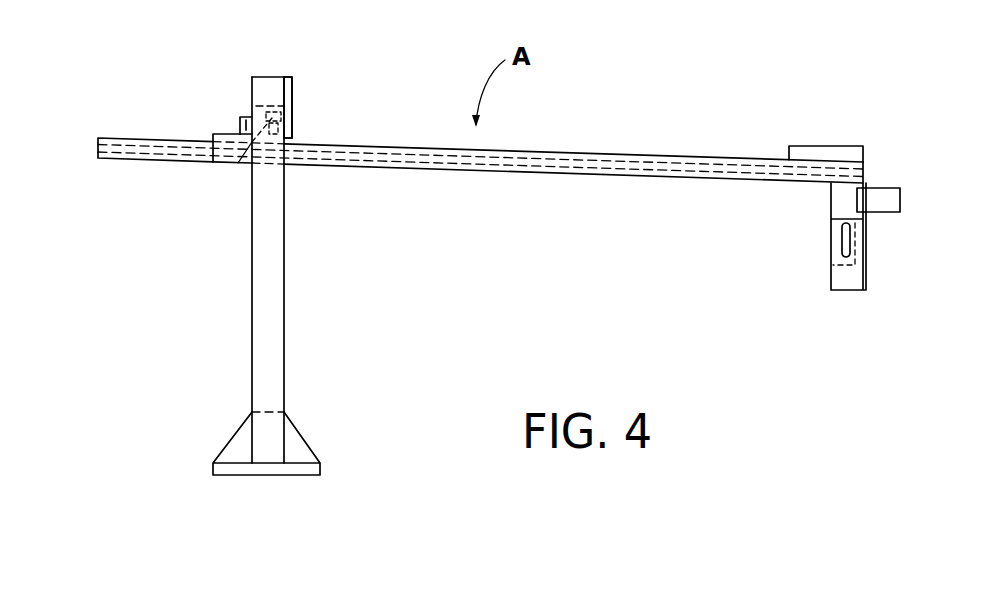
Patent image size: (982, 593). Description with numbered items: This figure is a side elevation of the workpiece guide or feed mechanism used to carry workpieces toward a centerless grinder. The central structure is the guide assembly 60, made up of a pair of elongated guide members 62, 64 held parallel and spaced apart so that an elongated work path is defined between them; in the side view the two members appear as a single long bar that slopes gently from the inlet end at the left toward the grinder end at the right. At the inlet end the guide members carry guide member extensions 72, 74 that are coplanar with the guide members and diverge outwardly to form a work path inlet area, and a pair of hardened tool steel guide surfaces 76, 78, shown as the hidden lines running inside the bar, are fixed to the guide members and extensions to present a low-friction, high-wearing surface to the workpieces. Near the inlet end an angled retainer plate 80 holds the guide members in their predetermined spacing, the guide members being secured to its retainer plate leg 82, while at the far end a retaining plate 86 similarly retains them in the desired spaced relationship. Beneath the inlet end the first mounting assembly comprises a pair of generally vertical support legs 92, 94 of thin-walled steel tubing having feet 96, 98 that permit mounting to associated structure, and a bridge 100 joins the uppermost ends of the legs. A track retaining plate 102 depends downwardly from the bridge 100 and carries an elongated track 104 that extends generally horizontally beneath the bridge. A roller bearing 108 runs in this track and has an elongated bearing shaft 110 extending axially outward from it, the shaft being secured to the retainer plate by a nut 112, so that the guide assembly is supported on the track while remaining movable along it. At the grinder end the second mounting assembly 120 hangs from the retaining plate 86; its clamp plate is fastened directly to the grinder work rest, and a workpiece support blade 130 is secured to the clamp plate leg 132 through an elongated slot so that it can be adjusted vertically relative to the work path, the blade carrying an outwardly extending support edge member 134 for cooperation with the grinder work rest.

The guide assembly 60 is at (480, 149).
The guide member 62 is at (538, 144).
The guide member 64 is at (686, 158).
The guide member extension 72 is at (155, 115).
The guide member extension 74 is at (158, 142).
The guide surface 76 is at (480, 188).
The guide surface 78 is at (590, 165).
The angled retainer plate 80 is at (221, 125).
The retainer plate leg 82 is at (223, 134).
The retaining plate 86 is at (833, 147).
The support leg 92 is at (318, 257).
The support leg 94 is at (275, 272).
The foot 96 is at (318, 431).
The foot 98 is at (288, 470).
The bridge 100 is at (310, 89).
The track retaining plate 102 is at (292, 91).
The elongated track 104 is at (270, 128).
The roller bearing 108 is at (274, 122).
The bearing shaft 110 is at (238, 163).
The nut 112 is at (247, 116).
The second mounting assembly 120 is at (899, 175).
The workpiece support blade 130 is at (850, 202).
The leg 132 is at (852, 276).
The support edge member 134 is at (880, 195).